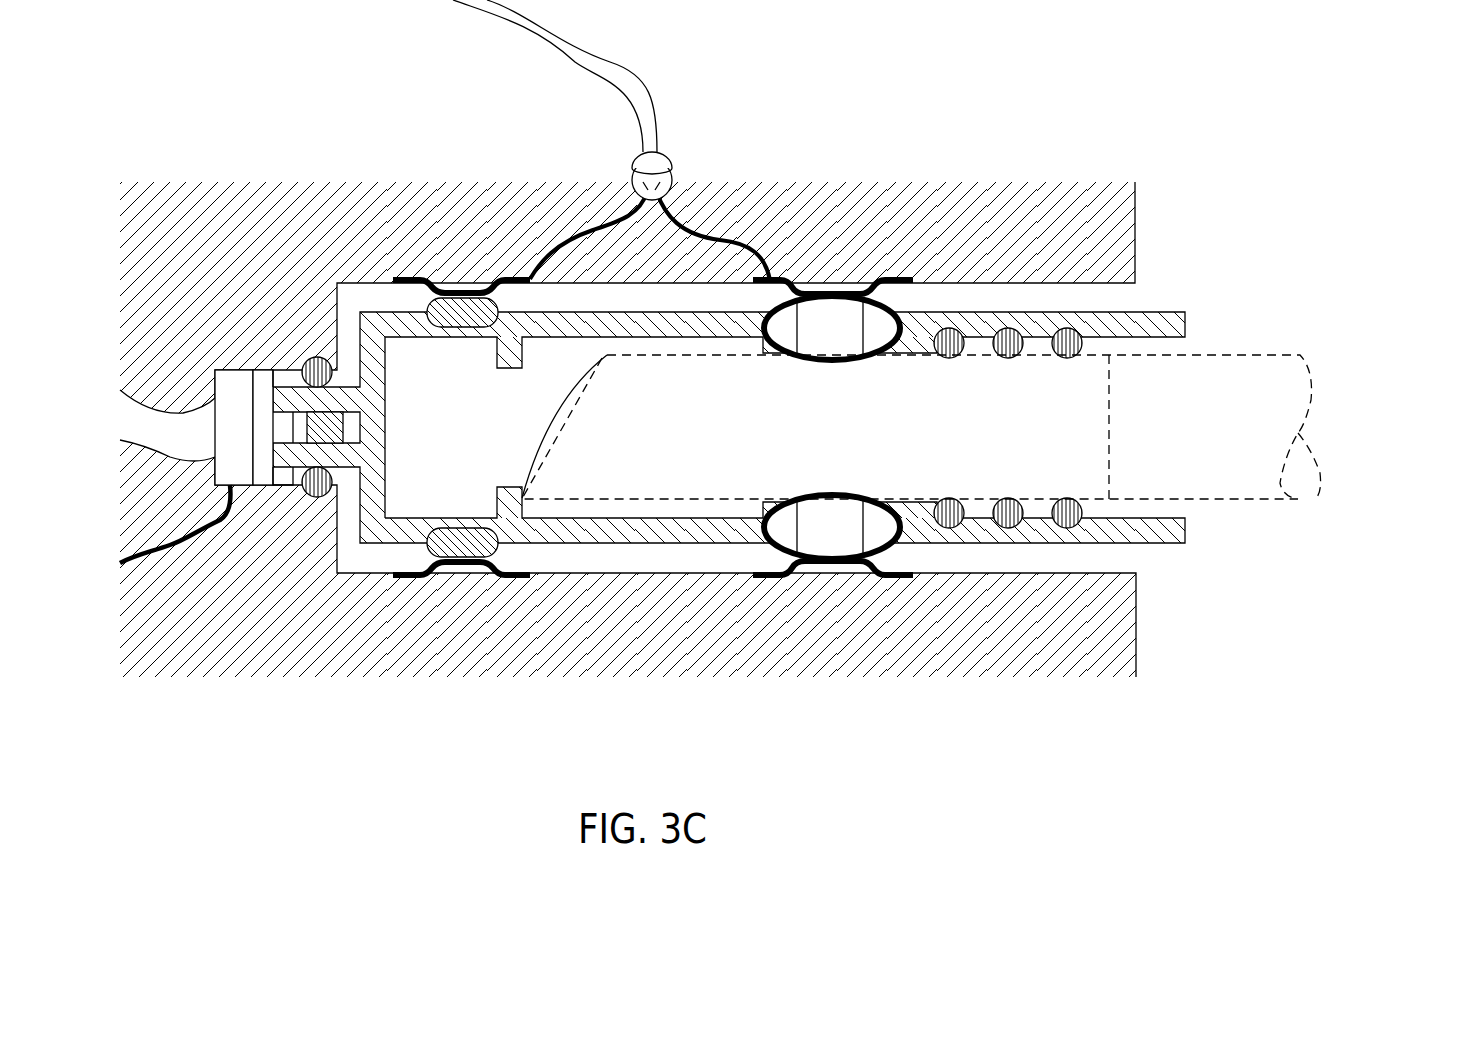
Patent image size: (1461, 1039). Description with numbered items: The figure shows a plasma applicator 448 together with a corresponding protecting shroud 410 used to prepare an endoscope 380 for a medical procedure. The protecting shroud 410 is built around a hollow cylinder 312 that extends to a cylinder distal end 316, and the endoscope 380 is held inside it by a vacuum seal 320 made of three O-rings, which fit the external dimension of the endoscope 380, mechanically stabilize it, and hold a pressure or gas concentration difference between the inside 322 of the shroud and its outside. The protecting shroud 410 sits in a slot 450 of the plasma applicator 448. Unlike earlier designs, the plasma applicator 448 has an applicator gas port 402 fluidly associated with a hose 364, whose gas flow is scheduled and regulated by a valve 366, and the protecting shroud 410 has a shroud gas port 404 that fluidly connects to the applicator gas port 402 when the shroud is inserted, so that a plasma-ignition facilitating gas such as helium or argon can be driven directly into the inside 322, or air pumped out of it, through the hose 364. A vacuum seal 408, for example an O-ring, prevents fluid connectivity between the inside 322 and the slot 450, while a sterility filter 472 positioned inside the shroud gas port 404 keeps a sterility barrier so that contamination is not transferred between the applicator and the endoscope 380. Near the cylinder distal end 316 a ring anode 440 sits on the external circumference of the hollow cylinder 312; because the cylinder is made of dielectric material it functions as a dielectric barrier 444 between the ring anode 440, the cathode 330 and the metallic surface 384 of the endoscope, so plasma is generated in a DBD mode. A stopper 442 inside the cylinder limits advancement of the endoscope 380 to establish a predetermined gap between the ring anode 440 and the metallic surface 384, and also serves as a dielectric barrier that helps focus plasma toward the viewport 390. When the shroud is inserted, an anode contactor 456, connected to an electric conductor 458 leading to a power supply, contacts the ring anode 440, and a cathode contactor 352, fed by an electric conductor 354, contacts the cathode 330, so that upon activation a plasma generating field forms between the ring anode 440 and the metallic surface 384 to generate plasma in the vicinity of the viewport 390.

The hollow cylinder 312 is at (1187, 328).
The cylinder distal end 316 is at (368, 283).
The vacuum seal 320 is at (953, 530).
The inside 322 is at (413, 357).
The cathode 330 is at (830, 320).
The cathode contactor 352 is at (870, 290).
The electric conductor 354 is at (721, 240).
The hose 364 is at (172, 423).
The valve 366 is at (243, 370).
The endoscope 380 is at (1320, 495).
The metallic surface 384 is at (1093, 478).
The viewport 390 is at (557, 415).
The applicator gas port 402 is at (265, 485).
The shroud gas port 404 is at (273, 387).
The vacuum seal 408 is at (317, 357).
The protecting shroud 410 is at (1172, 545).
The ring anode 440 is at (461, 310).
The stopper 442 is at (520, 508).
The dielectric barrier 444 is at (463, 342).
The plasma applicator 448 is at (1130, 208).
The slot 450 is at (1127, 298).
The anode contactor 456 is at (495, 293).
The electric conductor 458 is at (613, 218).
The sterility filter 472 is at (298, 443).